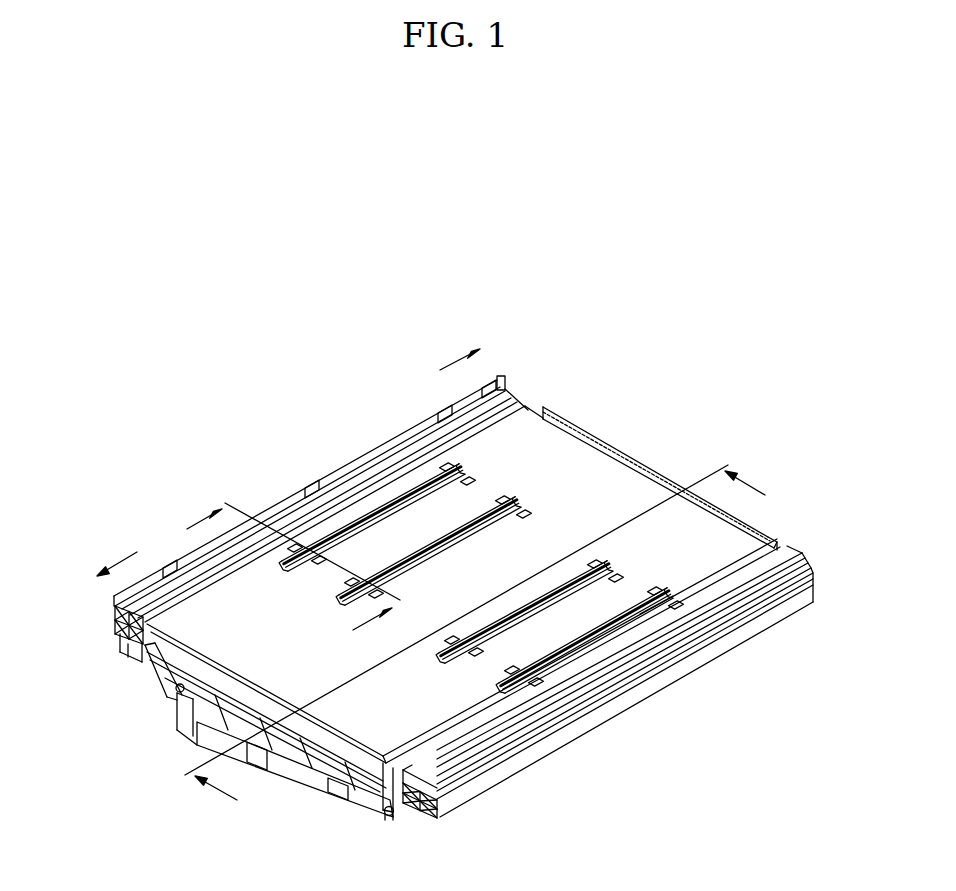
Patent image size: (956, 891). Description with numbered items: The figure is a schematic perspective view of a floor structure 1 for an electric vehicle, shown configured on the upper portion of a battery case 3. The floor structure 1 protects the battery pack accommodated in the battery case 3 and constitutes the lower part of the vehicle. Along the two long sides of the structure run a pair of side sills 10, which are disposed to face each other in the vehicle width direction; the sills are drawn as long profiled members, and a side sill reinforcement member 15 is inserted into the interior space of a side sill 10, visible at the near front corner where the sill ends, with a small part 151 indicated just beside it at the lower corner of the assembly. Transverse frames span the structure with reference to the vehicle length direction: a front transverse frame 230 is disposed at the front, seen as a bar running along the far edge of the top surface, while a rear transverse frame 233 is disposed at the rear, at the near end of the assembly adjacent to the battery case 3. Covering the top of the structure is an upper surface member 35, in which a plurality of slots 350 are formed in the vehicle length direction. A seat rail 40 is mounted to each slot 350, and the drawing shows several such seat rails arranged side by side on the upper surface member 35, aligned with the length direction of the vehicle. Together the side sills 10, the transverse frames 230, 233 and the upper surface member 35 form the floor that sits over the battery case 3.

The floor structure 1 is at (565, 386).
The side sills 10 is at (330, 478).
The upper surface member 35 is at (582, 468).
The front transverse frame 230 is at (643, 466).
The seat rail 40 is at (699, 606).
The slots 350 is at (645, 622).
The battery case 3 is at (186, 749).
The rear transverse frame 233 is at (167, 700).
The side sill reinforcement member 15 is at (423, 818).
The roller 151 is at (387, 810).